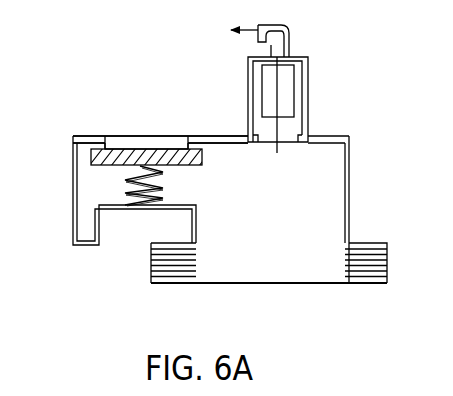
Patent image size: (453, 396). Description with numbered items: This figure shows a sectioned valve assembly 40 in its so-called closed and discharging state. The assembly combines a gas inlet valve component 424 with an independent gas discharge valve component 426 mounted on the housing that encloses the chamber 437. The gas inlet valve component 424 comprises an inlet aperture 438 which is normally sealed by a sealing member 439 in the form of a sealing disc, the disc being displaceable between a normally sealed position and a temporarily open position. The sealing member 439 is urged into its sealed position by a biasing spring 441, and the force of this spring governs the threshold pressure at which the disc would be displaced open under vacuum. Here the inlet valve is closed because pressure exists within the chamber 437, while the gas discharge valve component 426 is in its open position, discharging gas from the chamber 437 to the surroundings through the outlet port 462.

The dispensing valve assembly 40 is at (356, 51).
The gas inlet valve component 424 is at (136, 129).
The gas discharge valve component 426 is at (319, 111).
The chamber 437 is at (264, 266).
The inlet aperture 438 is at (150, 145).
The sealing member 439 is at (117, 158).
The biasing spring 441 is at (143, 170).
The outlet port 462 is at (290, 46).